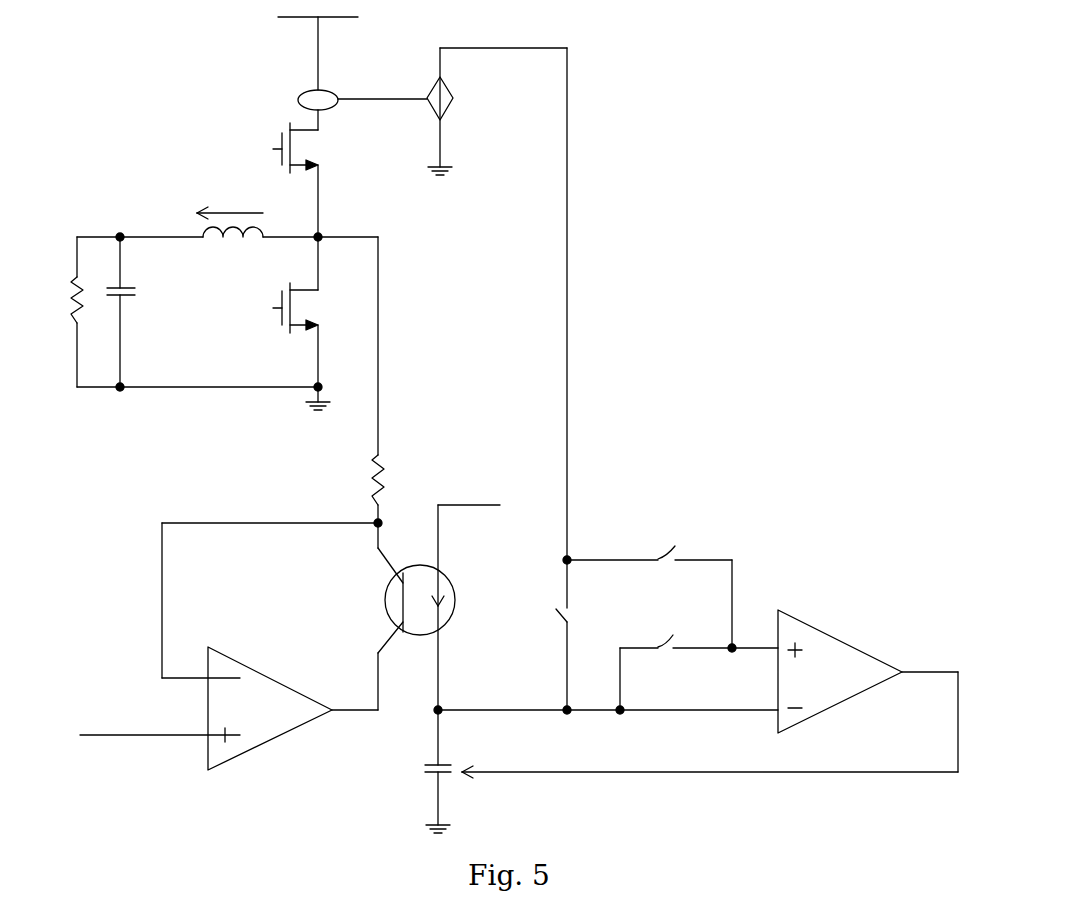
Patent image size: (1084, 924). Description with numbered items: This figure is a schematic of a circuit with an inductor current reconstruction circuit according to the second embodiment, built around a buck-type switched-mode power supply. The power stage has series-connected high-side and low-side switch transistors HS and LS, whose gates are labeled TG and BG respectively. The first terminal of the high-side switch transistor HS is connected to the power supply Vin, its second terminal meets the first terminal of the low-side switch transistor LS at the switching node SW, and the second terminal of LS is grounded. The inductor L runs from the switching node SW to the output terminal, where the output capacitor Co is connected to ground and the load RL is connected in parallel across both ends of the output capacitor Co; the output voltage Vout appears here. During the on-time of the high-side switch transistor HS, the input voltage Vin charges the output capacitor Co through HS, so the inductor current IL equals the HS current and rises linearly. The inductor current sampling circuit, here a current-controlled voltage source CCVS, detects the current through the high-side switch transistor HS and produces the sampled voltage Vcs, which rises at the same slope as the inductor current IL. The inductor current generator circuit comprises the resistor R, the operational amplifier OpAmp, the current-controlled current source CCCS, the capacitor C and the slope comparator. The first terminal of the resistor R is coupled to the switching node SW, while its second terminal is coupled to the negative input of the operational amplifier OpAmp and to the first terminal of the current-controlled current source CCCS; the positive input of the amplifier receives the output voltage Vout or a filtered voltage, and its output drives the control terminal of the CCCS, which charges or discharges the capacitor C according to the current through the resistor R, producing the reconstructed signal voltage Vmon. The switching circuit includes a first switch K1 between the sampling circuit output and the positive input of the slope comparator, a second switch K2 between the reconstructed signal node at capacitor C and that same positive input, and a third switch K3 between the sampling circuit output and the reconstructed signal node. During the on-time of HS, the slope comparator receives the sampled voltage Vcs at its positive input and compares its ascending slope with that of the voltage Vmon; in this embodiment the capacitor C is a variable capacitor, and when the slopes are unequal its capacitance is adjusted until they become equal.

The input voltage Vin is at (318, 73).
The high-side switch transistor HS is at (316, 180).
The top gate drive signal TG is at (269, 169).
The low-side switch transistor LS is at (315, 323).
The bottom gate drive signal BG is at (269, 330).
The switching node SW is at (320, 227).
The inductor L is at (191, 246).
The inductor current IL is at (230, 207).
The output voltage Vout is at (117, 226).
The load RL is at (64, 312).
The output capacitor Co is at (133, 314).
The current-controlled voltage source CCVS is at (414, 111).
The sampled voltage Vcs is at (503, 293).
The resistor R is at (391, 392).
The Op Amp OpAmp is at (229, 646).
The current-controlled current source CCCS is at (439, 635).
The voltage of the reconstructed signal Vmon is at (606, 701).
The capacitor C is at (426, 798).
The first switch K1 is at (651, 592).
The second switch K2 is at (699, 665).
The third switch K3 is at (551, 633).
The slope comparator is at (710, 694).